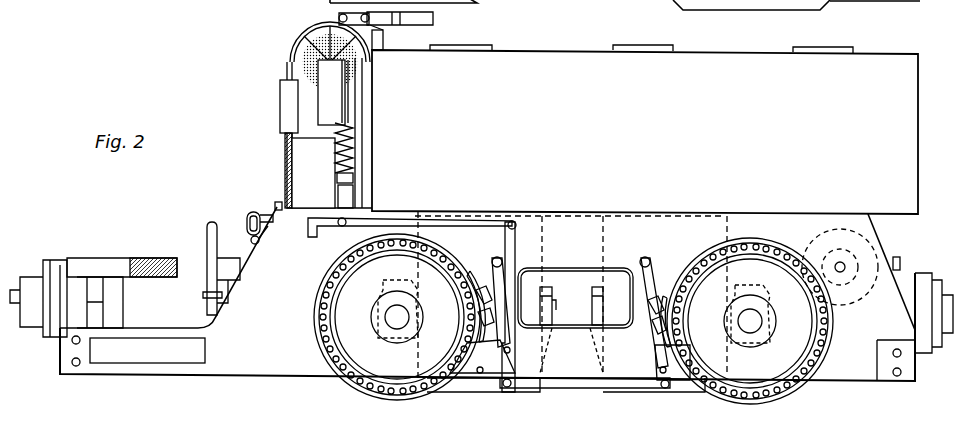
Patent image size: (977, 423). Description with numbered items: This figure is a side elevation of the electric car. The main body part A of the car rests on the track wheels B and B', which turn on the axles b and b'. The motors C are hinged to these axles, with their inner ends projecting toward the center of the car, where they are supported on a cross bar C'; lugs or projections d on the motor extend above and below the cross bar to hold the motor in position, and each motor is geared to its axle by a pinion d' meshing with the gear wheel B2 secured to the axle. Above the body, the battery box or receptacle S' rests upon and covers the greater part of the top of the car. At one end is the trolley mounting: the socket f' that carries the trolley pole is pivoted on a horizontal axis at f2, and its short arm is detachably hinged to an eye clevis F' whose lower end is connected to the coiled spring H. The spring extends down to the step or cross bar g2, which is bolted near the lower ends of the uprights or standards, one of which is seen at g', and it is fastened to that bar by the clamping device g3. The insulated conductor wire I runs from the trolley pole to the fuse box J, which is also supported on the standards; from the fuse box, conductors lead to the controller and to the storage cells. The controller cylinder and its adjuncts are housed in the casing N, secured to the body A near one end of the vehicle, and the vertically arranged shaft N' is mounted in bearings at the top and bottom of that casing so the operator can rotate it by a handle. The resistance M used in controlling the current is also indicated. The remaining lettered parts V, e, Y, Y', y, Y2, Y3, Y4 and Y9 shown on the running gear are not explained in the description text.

The box or receptacle S' is at (645, 129).
The main body part A is at (487, 294).
The track wheel B' is at (617, 200).
The track wheel B is at (750, 321).
The gear wheel B2 is at (338, 354).
The axle b' is at (381, 311).
The axle b is at (758, 316).
The brake shoe Y' is at (565, 322).
The brake lever Y is at (570, 311).
The brake lever pivot y is at (570, 251).
The brake rod Y2 is at (430, 225).
The brake connecting bar Y3 is at (515, 256).
The lower brake rod Y4 is at (574, 383).
The brake hand lever Y9 is at (207, 250).
The motor C is at (571, 297).
The cross bar C' is at (575, 311).
The lug or projection d is at (571, 301).
The pinion d' is at (573, 300).
The controller contact connection e is at (553, 300).
The wheel housing V is at (300, 55).
The fuse box J is at (280, 118).
The insulated conductor wire I is at (285, 152).
The upright or standard g' is at (357, 133).
The step or cross bar g2 is at (355, 180).
The clamping device g3 is at (345, 196).
The coiled spring H is at (347, 138).
The casing N is at (251, 227).
The vertically arranged shaft N' is at (269, 199).
The eye clevis F' is at (372, 24).
The socket f' is at (382, 35).
The pivot f2 is at (383, 49).
The resistance M is at (880, 260).